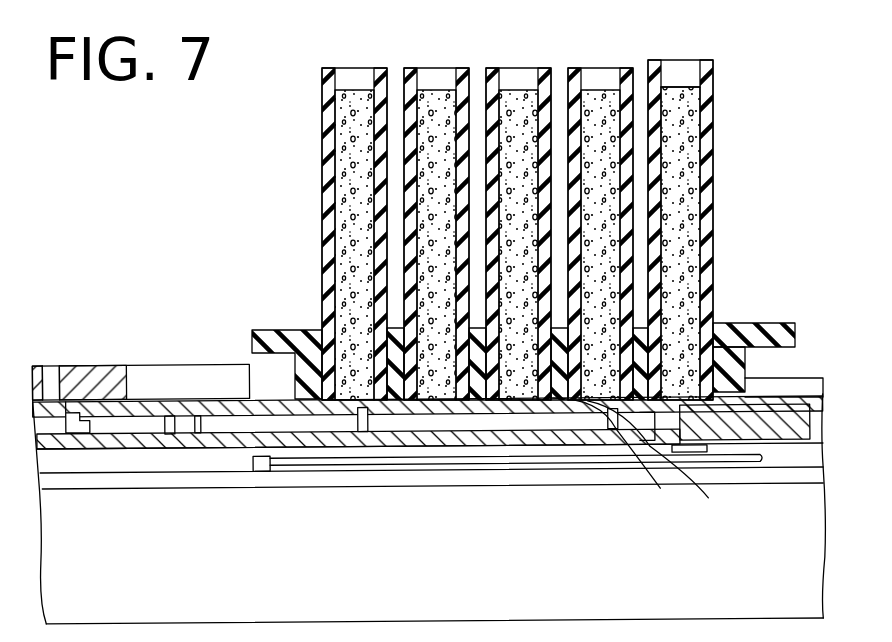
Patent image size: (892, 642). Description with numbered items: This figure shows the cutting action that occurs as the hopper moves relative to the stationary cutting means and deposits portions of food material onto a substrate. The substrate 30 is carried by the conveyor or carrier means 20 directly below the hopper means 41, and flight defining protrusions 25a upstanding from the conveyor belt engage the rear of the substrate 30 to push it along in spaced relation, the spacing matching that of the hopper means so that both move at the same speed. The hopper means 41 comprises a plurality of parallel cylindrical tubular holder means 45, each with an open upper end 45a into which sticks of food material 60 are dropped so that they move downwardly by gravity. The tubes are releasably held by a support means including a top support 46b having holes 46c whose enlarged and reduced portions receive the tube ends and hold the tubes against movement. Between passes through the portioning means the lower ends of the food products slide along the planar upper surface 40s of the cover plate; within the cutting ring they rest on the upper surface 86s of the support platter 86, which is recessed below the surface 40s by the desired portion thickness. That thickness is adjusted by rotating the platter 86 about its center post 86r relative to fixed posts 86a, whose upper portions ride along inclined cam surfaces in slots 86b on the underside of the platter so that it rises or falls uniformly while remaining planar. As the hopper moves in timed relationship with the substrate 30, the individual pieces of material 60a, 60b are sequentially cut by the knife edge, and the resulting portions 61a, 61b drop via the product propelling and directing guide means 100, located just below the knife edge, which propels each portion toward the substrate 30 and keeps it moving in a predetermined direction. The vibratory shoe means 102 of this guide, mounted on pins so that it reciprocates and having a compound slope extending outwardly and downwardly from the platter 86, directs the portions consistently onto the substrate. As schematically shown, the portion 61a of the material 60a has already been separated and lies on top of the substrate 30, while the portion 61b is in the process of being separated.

The carrier means 20 is at (95, 478).
The flight defining protrusion 25a is at (264, 472).
The substrate receiver means 30 is at (490, 466).
The upper surface of cover plate 40s is at (765, 396).
The hopper means 41 is at (318, 214).
The cylindrical tubular holder means 45 is at (715, 105).
The open upper end 45a is at (678, 58).
The top support 46b is at (747, 330).
The holes 46c is at (728, 322).
The food materials 60 is at (352, 56).
The piece of material 60a is at (683, 195).
The piece of material 60b is at (597, 237).
The portion of material 61a is at (708, 500).
The portion of material 61b is at (660, 490).
The support platter 86 is at (197, 430).
The fixed posts 86a is at (168, 412).
The slots 86b is at (170, 412).
The center post 86r is at (364, 430).
The upper surface of platter 86s is at (243, 400).
The product propelling and directing guide means 100 is at (632, 445).
The vibratory shoe means 102 is at (612, 438).